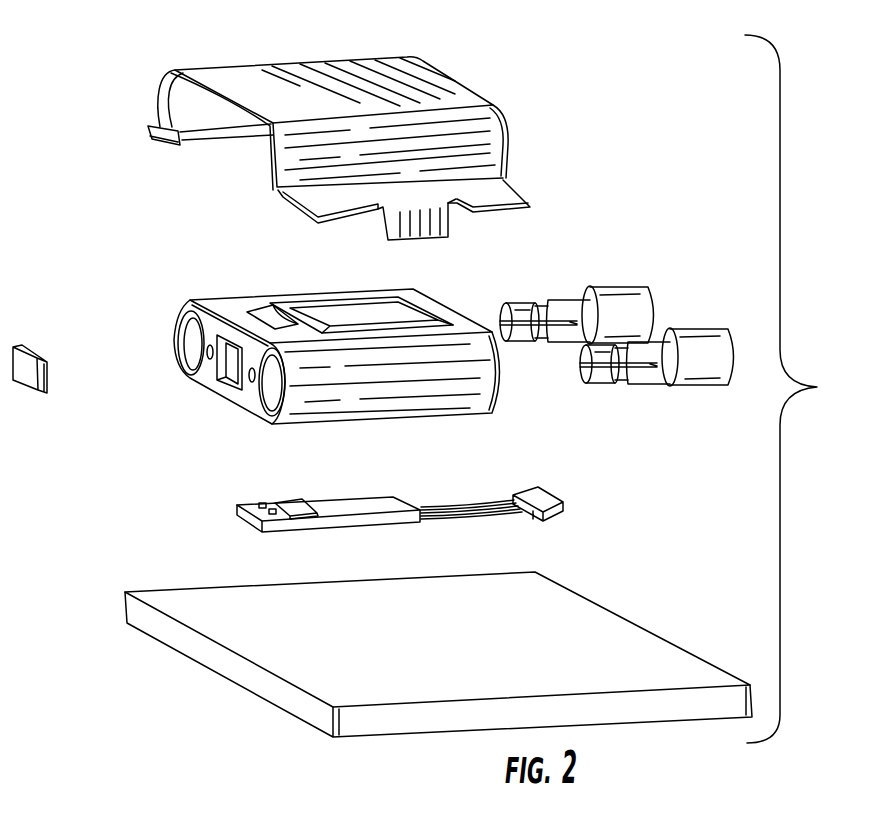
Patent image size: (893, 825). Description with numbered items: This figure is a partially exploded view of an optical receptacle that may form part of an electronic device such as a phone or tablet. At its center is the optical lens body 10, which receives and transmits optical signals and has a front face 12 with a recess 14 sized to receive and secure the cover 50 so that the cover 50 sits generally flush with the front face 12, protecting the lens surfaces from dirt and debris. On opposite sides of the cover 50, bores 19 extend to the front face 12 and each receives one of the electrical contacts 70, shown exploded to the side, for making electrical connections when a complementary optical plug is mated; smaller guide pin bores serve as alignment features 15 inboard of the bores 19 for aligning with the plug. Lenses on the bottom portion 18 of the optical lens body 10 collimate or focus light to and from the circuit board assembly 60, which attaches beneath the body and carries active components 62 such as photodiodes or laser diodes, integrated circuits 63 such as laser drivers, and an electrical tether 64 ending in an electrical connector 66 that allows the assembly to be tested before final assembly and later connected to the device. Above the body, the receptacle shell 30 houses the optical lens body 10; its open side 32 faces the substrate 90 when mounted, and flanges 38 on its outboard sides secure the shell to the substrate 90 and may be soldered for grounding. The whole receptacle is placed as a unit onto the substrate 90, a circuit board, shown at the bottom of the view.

The optical lens body 10 is at (208, 295).
The front face 12 is at (244, 408).
The recess 14 is at (222, 380).
The alignment features 15 is at (207, 354).
The bottom portion 18 is at (267, 423).
The bores 19 is at (186, 340).
The receptacle shell 30 is at (522, 126).
The open side 32 is at (228, 142).
The flanges 38 is at (506, 204).
The cover 50 is at (40, 355).
The circuit board assembly 60 is at (235, 512).
The active components 62 is at (273, 508).
The integrated circuits 63 is at (294, 510).
The electrical tether 64 is at (464, 510).
The electrical connector 66 is at (546, 516).
The electrical contacts 70 is at (702, 321).
The substrate 90 is at (157, 667).